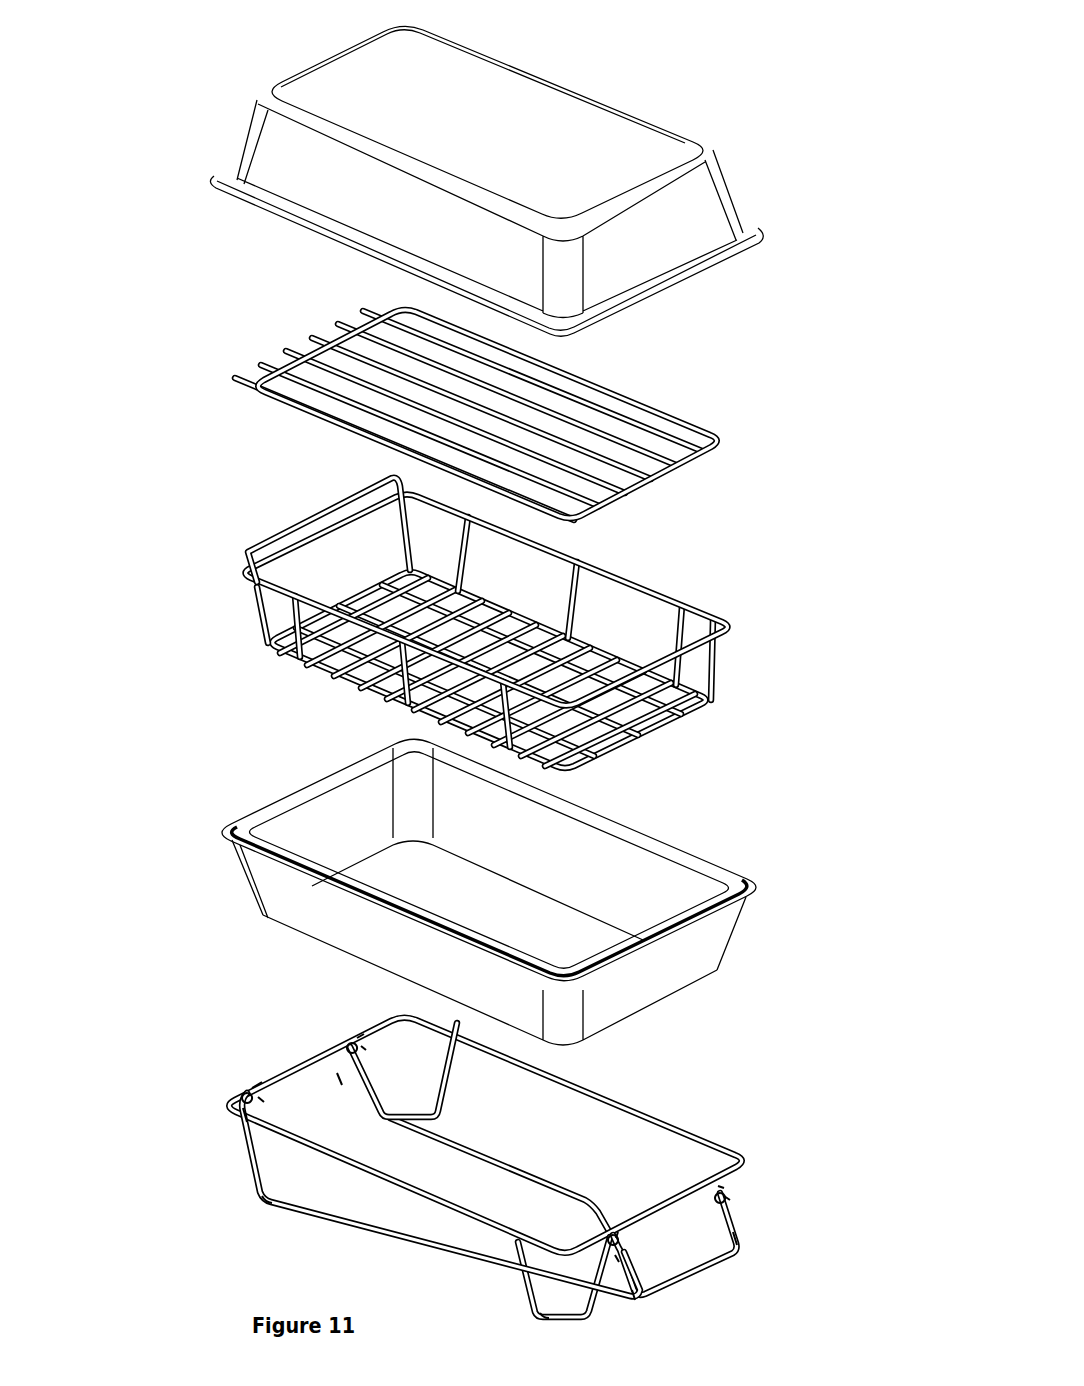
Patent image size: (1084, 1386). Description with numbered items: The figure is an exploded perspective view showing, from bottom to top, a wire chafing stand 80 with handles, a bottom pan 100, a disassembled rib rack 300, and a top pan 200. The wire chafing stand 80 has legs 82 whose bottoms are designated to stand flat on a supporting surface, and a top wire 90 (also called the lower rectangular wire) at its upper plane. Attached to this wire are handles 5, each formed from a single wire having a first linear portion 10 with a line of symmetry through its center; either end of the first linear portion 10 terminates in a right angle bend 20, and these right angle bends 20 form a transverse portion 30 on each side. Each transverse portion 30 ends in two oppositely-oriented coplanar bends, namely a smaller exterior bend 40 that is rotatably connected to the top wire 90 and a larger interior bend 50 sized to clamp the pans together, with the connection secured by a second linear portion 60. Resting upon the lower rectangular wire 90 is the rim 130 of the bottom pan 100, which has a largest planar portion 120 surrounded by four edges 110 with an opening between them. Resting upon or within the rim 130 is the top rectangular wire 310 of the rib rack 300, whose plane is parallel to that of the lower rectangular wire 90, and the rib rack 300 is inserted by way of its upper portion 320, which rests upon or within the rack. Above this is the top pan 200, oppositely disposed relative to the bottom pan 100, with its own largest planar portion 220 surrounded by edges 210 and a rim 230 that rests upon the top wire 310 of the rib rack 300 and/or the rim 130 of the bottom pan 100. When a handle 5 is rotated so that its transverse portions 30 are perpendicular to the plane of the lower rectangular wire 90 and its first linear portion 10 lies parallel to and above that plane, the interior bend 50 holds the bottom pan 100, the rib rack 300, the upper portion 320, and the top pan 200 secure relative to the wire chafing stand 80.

The handle 5 is at (484, 1167).
The first linear portion 10 is at (687, 1280).
The right angle bend 20 is at (632, 1278).
The transverse portion 30 is at (633, 1293).
The exterior bend 40 is at (615, 1233).
The interior bend 50 is at (617, 1260).
The second linear portion 60 is at (612, 1232).
The wire chafing stand 80 is at (327, 1207).
The legs 82 is at (550, 1320).
The top wire 90 is at (358, 1172).
The bottom pan 100 is at (489, 890).
The edges 110 is at (273, 893).
The largest planar portion 120 is at (417, 860).
The rim 130 is at (738, 905).
The top pan 200 is at (463, 168).
The edges 210 is at (707, 213).
The largest planar portion 220 is at (592, 135).
The rim 230 is at (217, 175).
The rib rack 300 is at (493, 623).
The top rectangular wire 310 is at (738, 633).
The upper portion 320 is at (727, 444).